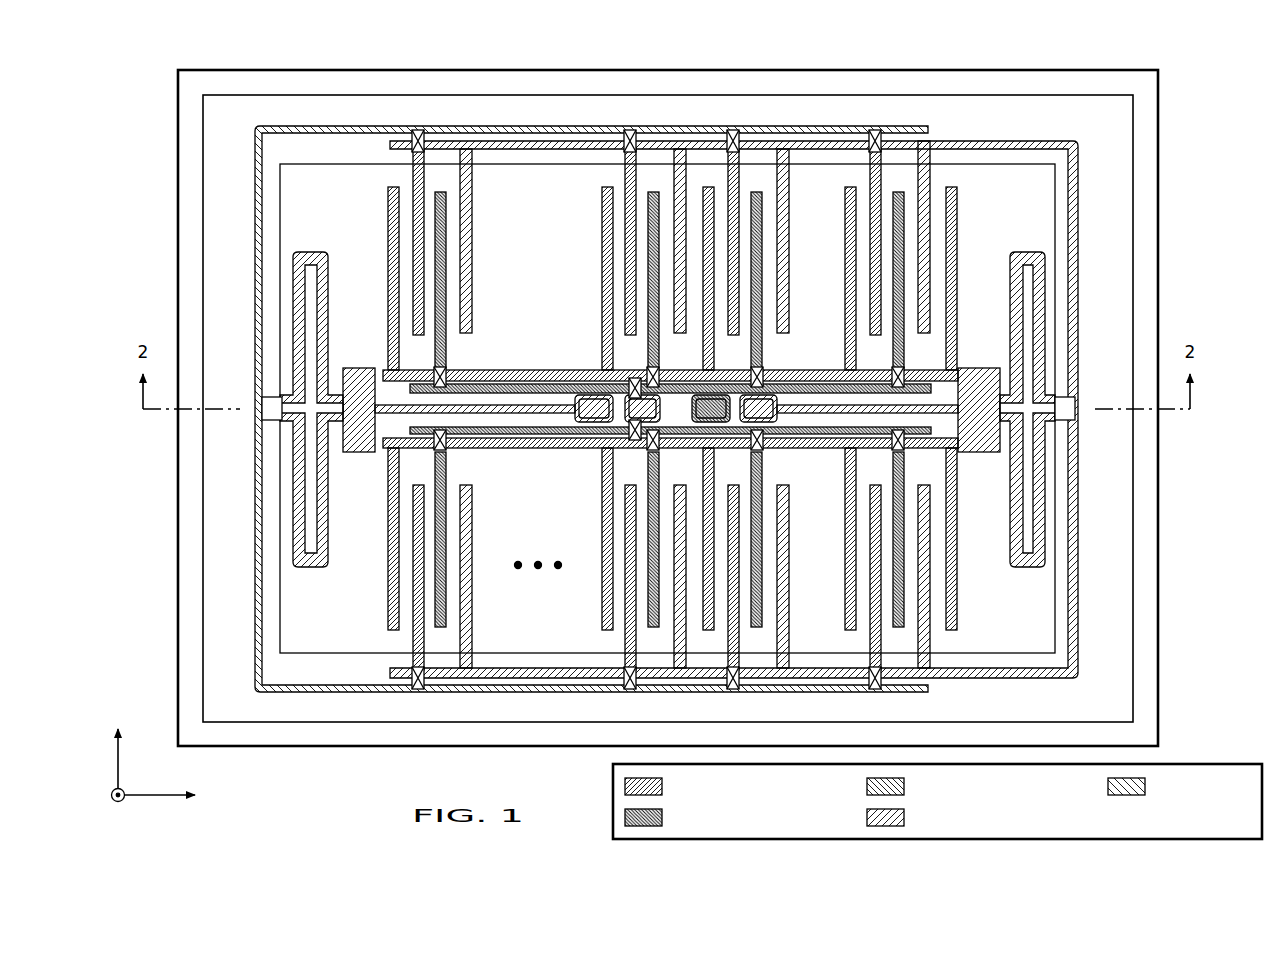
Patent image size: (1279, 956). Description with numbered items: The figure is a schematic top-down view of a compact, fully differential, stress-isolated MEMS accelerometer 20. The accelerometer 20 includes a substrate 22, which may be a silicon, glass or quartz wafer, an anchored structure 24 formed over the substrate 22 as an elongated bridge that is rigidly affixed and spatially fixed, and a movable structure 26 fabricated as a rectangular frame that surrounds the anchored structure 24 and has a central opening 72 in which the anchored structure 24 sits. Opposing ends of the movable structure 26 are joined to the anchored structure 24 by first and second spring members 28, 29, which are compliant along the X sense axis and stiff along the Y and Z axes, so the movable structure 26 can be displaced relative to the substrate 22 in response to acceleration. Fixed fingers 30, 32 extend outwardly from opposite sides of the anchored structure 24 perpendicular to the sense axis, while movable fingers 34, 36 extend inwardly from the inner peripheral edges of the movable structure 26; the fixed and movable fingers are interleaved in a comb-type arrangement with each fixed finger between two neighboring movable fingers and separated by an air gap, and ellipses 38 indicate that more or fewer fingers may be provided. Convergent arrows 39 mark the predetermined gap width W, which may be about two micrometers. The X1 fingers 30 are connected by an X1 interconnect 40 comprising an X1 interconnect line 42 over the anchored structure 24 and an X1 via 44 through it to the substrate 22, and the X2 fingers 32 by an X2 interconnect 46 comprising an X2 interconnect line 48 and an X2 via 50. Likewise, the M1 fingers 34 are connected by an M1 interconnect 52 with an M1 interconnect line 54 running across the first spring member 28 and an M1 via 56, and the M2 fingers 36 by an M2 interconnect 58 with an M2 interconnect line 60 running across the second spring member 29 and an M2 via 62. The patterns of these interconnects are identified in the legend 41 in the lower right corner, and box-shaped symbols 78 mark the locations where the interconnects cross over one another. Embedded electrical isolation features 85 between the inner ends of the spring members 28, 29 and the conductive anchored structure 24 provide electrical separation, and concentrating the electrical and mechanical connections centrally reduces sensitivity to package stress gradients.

The MEMS accelerometer 20 is at (148, 86).
The substrate 22 is at (1160, 100).
The anchored structure 24 is at (369, 366).
The movable structure 26 is at (218, 222).
The first spring member 28 is at (316, 252).
The second spring member 29 is at (1027, 252).
The X1 fixed fingers 30 is at (392, 187).
The X2 fixed fingers 32 is at (441, 192).
The M1 movable fingers 34 is at (419, 336).
The M2 movable fingers 36 is at (466, 334).
The ellipses 38 is at (510, 578).
The convergent arrows 39 is at (122, 758).
The X1 interconnect 40 is at (539, 368).
The legend 41 is at (1222, 764).
The X1 interconnect line 42 is at (500, 370).
The X1 via 44 is at (596, 440).
The X2 interconnect 46 is at (539, 451).
The X2 interconnect line 48 is at (504, 449).
The X2 via 50 is at (708, 426).
The M1 interconnect 52 is at (512, 124).
The M1 interconnect line 54 is at (345, 126).
The M1 via 56 is at (590, 395).
The M2 interconnect 58 is at (530, 152).
The M2 interconnect line 60 is at (992, 679).
The M2 via 62 is at (790, 440).
The central opening 72 is at (297, 197).
The box-shaped symbols 78 is at (416, 130).
The embedded electrical isolation features 85 is at (370, 452).